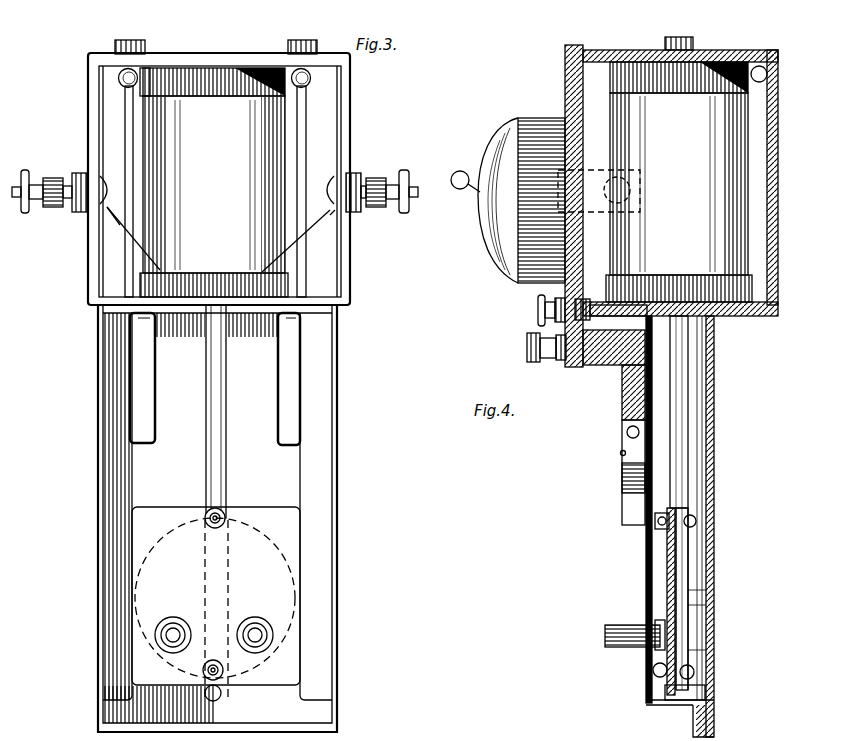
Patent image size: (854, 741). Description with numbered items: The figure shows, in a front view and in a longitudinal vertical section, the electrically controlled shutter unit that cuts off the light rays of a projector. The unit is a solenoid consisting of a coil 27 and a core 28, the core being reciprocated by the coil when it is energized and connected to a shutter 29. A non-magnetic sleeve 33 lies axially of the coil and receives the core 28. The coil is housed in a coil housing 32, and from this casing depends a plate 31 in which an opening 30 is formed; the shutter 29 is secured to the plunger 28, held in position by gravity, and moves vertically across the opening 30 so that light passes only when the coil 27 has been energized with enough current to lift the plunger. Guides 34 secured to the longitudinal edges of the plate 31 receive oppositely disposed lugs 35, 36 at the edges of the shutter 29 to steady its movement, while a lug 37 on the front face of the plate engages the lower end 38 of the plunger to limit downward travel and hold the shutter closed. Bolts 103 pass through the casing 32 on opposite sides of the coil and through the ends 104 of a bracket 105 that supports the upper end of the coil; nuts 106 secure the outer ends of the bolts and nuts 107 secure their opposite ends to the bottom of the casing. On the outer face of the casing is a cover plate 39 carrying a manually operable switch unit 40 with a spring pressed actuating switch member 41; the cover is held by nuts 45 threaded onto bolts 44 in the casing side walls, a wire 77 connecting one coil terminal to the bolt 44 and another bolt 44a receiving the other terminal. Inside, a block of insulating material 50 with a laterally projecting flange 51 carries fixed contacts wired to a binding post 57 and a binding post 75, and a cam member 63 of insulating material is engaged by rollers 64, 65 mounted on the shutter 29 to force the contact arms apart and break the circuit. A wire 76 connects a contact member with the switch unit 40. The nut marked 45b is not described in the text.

In FIG. 3, the coil 27 is at (173, 135).
In FIG. 4, the coil 27 is at (733, 135).
In FIG. 3, the core 28 is at (225, 375).
In FIG. 4, the core 28 is at (680, 416).
In FIG. 3, the shutter 29 is at (145, 522).
In FIG. 4, the shutter 29 is at (668, 572).
In FIG. 4, the opening 30 is at (713, 619).
In FIG. 4, the plate 31 is at (712, 452).
In FIG. 3, the coil housing 32 is at (350, 119).
In FIG. 4, the coil housing 32 is at (778, 220).
In FIG. 3, the non-magnetic sleeve 33 is at (200, 298).
In FIG. 3, the guides 34 is at (336, 546).
In FIG. 4, the lug 35 is at (696, 606).
In FIG. 4, the lug 36 is at (655, 666).
In FIG. 3, the lug 37 is at (222, 694).
In FIG. 4, the lug 37 is at (683, 700).
In FIG. 4, the lower end of plunger 38 is at (693, 672).
In FIG. 4, the cover plate 39 is at (566, 100).
In FIG. 4, the manually operable switch unit 40 is at (497, 213).
In FIG. 4, the spring pressed actuating switch member 41 is at (458, 176).
In FIG. 3, the threaded bolt 44 is at (23, 172).
In FIG. 3, the bolt 44a is at (362, 178).
In FIG. 3, the nut 45 is at (56, 179).
In FIG. 3, the sleeve 45b is at (385, 180).
In FIG. 4, the block of insulating material 50 is at (574, 367).
In FIG. 4, the flange 51 is at (620, 412).
In FIG. 4, the binding post 57 is at (527, 346).
In FIG. 4, the cam member 63 is at (634, 508).
In FIG. 3, the roller 64 is at (175, 632).
In FIG. 4, the roller 64 is at (610, 642).
In FIG. 3, the roller 65 is at (255, 632).
In FIG. 4, the binding post 75 is at (540, 312).
In FIG. 3, the wire 76 is at (330, 215).
In FIG. 3, the wire 77 is at (120, 225).
In FIG. 3, the bolts 103 is at (128, 105).
In FIG. 3, the ends of bracket 104 is at (143, 70).
In FIG. 3, the bracket 105 is at (213, 78).
In FIG. 3, the nuts 106 is at (128, 44).
In FIG. 4, the nuts 106 is at (690, 43).
In FIG. 3, the nuts 107 is at (140, 333).